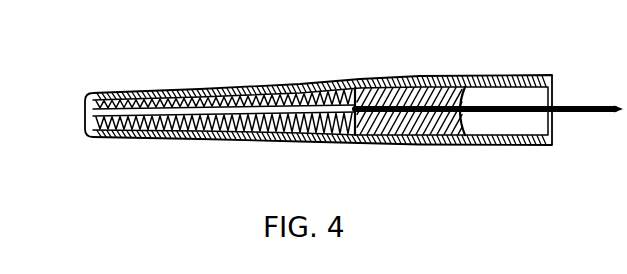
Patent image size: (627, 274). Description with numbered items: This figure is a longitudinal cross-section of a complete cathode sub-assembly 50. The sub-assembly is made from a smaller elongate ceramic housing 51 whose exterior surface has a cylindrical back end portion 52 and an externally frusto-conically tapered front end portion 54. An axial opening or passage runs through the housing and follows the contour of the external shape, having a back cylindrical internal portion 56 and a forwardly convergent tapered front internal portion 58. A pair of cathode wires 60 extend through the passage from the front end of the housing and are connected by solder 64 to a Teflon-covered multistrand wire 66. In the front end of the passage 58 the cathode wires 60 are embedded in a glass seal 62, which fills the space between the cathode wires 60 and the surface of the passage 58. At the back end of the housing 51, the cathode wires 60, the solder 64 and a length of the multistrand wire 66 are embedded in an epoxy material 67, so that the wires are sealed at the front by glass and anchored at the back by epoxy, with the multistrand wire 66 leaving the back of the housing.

The cathode sub-assembly 50 is at (262, 160).
The elongate ceramic housing 51 is at (420, 146).
The cylindrical back end portion 52 is at (482, 75).
The frusto-conically tapered front end portion 54 is at (239, 89).
The back cylindrical internal portion 56 is at (507, 91).
The tapered front internal portion 58 is at (313, 92).
The cathode wires 60 is at (87, 114).
The glass seal 62 is at (146, 101).
The solder 64 is at (363, 92).
The multistrand wire 66 is at (590, 105).
The epoxy material 67 is at (426, 88).